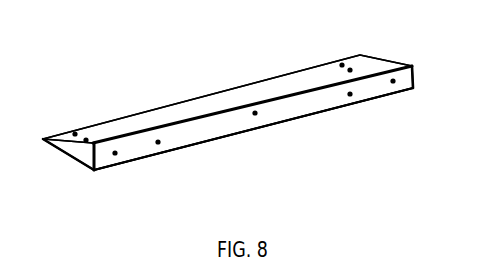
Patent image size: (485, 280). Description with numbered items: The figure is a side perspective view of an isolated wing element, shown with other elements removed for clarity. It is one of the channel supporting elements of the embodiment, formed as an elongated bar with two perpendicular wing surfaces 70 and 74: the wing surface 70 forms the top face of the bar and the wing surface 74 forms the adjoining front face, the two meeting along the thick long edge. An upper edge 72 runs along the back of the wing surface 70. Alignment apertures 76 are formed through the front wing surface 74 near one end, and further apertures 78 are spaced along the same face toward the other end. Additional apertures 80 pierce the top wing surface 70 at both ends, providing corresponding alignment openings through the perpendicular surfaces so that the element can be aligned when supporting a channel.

The wing surface 70 is at (258, 82).
The top surface of bar 72 is at (158, 108).
The wing surface 74 is at (210, 130).
The alignment apertures 76 is at (158, 142).
The mounting holes (right) 78 is at (255, 113).
The top surface holes 80 is at (86, 140).